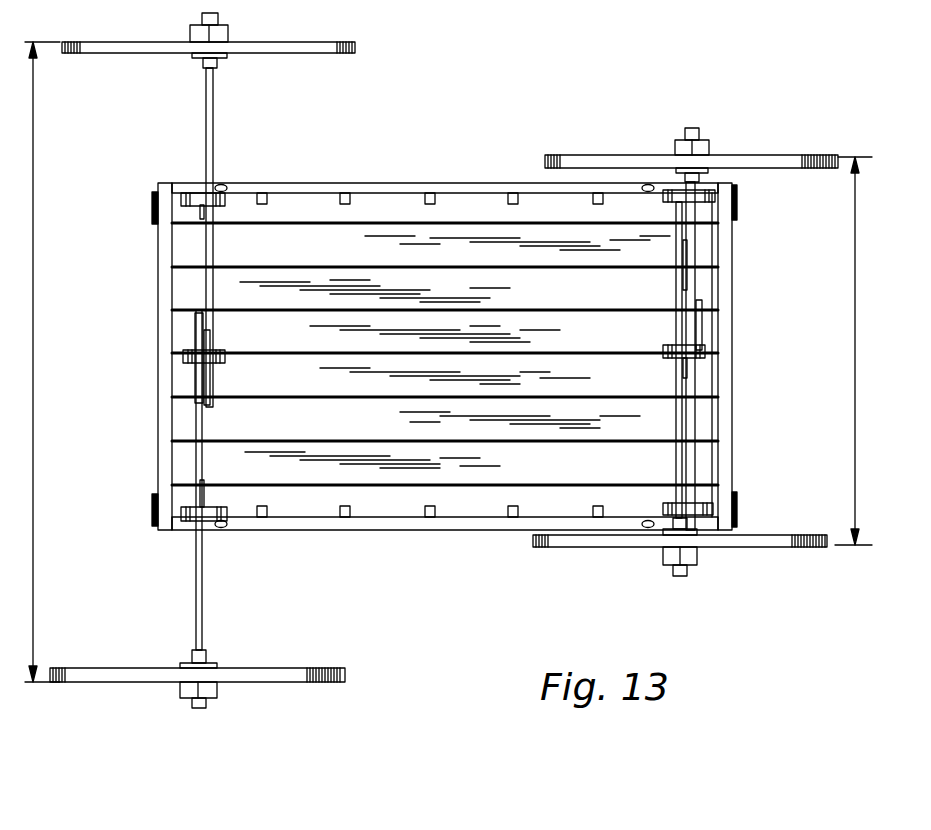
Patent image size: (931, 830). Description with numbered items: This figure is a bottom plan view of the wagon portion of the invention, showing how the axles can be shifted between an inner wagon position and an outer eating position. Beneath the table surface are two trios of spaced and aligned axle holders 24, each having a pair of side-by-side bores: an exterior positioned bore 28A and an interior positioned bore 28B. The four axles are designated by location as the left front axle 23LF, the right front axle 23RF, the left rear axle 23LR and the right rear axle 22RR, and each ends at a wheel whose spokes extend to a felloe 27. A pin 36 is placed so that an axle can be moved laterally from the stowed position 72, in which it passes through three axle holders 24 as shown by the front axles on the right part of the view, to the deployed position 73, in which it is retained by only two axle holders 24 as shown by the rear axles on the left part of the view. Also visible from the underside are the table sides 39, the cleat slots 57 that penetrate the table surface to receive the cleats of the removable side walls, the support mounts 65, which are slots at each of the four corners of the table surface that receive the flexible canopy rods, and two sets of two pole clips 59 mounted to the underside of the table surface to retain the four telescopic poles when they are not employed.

The felloe 27 is at (355, 45).
The left rear axle 23LR is at (213, 112).
The right rear vertical shaft 22RR is at (202, 600).
The left front axle 23LF is at (696, 250).
The right front axle 23RF is at (680, 470).
The exterior bore 28A is at (197, 352).
The interior bore 28B is at (205, 193).
The axle holder 24 is at (676, 197).
The pin 36 is at (213, 205).
The table side 39 is at (348, 183).
The cleat slot 57 is at (430, 193).
The pole clip 59 is at (227, 188).
The support mount 65 is at (172, 215).
The stowed position 72 is at (855, 333).
The deployed position 73 is at (36, 372).